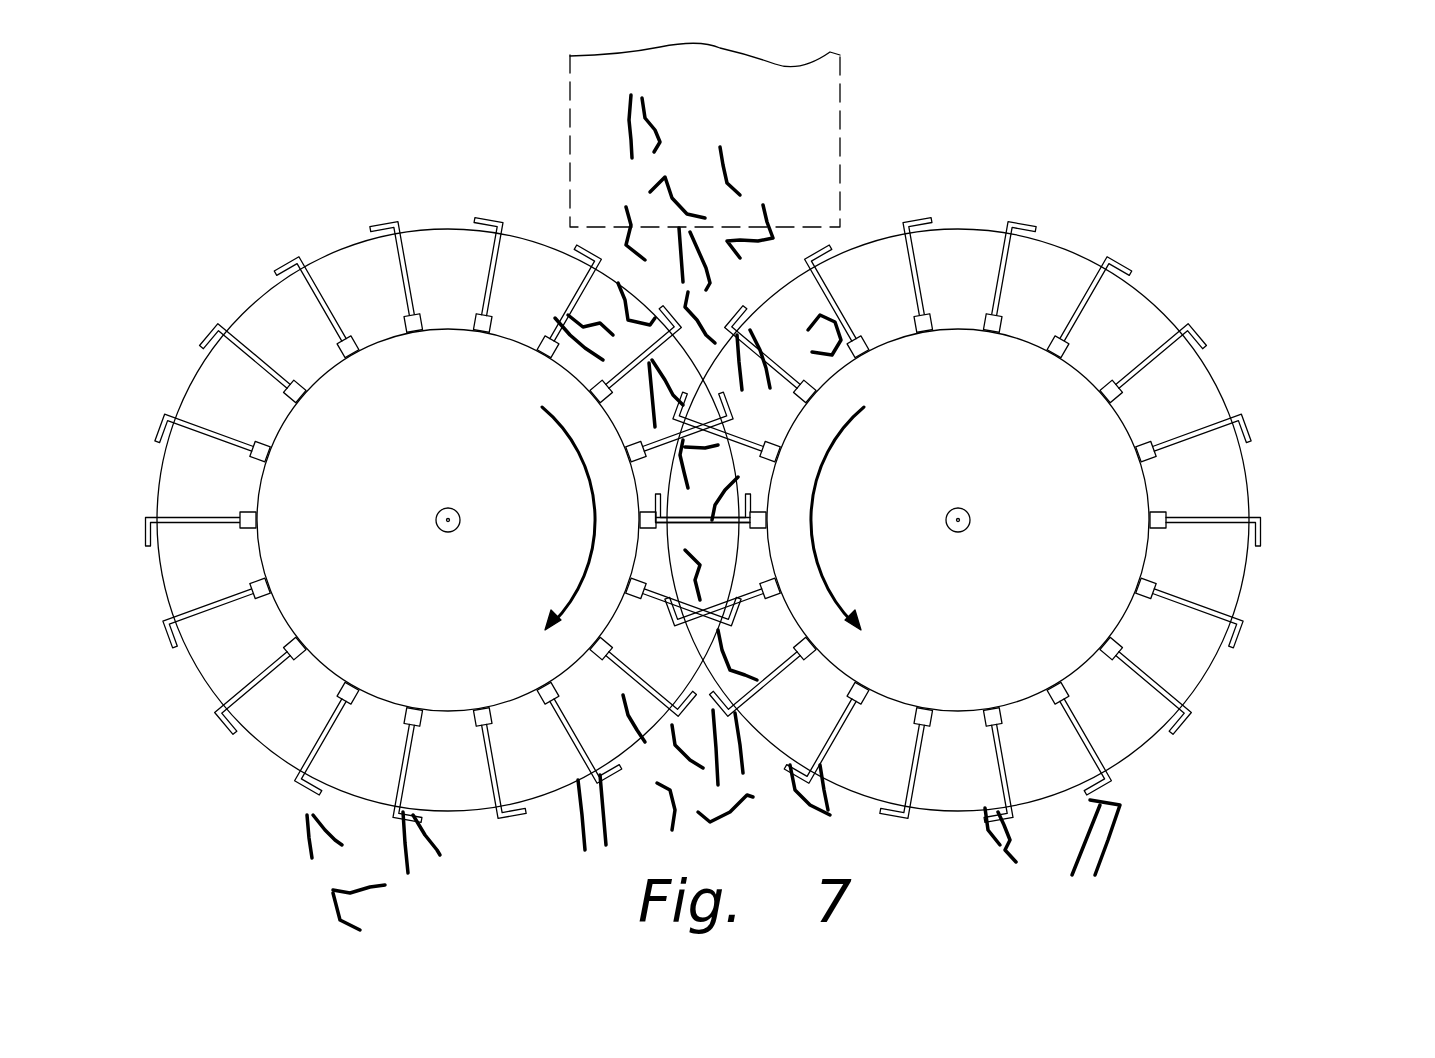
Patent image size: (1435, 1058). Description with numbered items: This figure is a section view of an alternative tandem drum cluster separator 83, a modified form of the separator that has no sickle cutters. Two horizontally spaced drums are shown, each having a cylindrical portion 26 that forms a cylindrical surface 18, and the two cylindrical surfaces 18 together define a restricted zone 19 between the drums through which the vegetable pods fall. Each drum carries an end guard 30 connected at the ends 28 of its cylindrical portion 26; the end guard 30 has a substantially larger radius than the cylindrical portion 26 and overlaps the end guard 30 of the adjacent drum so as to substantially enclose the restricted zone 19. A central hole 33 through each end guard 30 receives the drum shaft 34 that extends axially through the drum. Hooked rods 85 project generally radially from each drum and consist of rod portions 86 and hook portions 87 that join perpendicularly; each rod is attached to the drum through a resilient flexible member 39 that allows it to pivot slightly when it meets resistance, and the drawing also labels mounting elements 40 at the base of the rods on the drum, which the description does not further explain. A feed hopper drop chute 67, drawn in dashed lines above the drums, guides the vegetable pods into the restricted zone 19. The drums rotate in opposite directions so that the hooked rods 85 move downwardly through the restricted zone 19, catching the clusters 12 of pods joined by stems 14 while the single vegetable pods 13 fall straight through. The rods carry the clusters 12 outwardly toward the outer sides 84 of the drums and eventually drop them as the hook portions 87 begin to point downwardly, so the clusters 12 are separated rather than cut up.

The clusters 12 is at (655, 125).
The single vegetable pods 13 is at (627, 152).
The stems 14 is at (633, 96).
The cylindrical surface 18 is at (323, 665).
The restricted zone 19 is at (752, 540).
The cylindrical portion 26 is at (382, 700).
The ends 28 is at (258, 490).
The end guard 30 is at (258, 742).
The central hole 33 is at (454, 528).
The drum shaft 34 is at (448, 508).
The resilient flexible member 39 is at (408, 318).
The mounting block 40 is at (266, 583).
The feed hopper drop chute 67 is at (843, 148).
The alternative tandem drum cluster separator 83 is at (200, 667).
The outer sides 84 is at (260, 477).
The hooked rods 85 is at (300, 317).
The rod portions 86 is at (408, 270).
The hook portions 87 is at (388, 229).